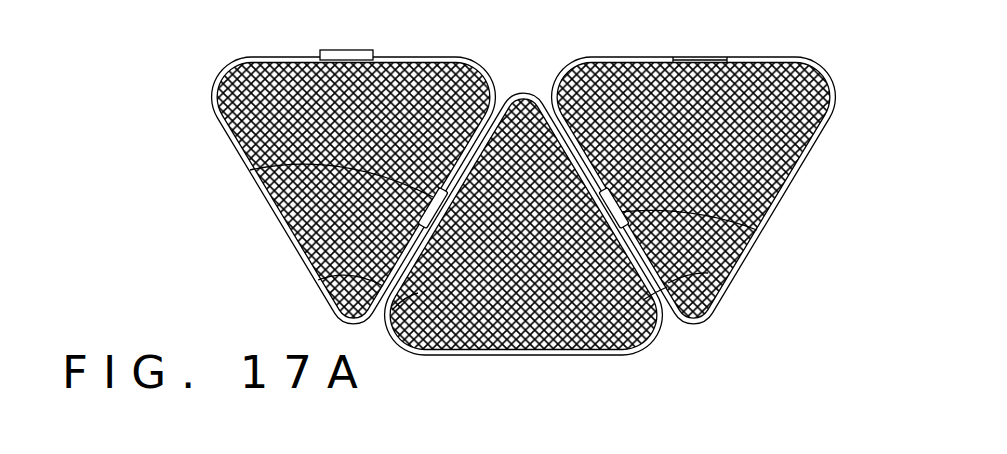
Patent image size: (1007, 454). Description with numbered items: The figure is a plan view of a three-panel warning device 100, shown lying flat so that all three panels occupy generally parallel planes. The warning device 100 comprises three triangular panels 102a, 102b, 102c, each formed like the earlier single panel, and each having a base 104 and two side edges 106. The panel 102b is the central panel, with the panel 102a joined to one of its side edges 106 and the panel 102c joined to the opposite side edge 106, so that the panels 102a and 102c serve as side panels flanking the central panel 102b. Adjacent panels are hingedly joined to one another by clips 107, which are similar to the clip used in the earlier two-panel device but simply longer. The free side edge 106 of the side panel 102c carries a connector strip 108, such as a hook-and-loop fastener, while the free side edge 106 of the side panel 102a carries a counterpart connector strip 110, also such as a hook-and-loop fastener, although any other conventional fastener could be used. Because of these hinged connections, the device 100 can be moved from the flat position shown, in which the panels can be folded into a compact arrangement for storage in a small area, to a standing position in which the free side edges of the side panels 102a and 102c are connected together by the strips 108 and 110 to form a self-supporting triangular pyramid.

The three-panel warning device 100 is at (536, 200).
The side panel 102a is at (804, 48).
The central panel 102b is at (620, 364).
The side panel 102c is at (266, 224).
The base 104 is at (298, 258).
The side edges 106 is at (437, 57).
The clips 107 is at (270, 167).
The connector strip 108 is at (347, 50).
The counterpart connector strip 110 is at (693, 57).